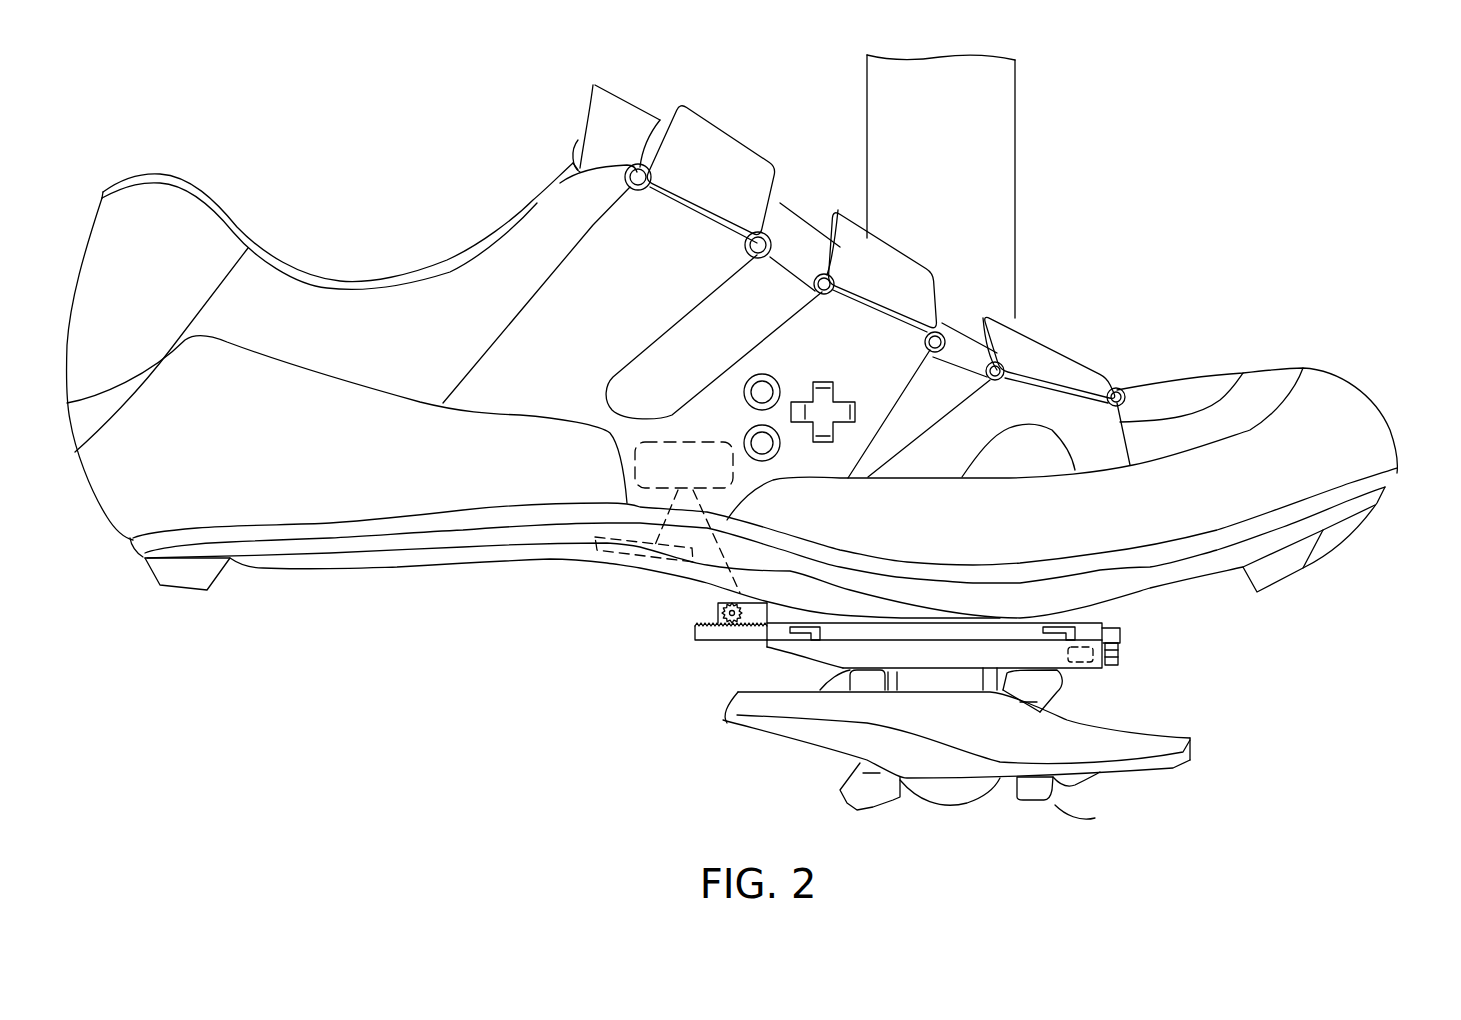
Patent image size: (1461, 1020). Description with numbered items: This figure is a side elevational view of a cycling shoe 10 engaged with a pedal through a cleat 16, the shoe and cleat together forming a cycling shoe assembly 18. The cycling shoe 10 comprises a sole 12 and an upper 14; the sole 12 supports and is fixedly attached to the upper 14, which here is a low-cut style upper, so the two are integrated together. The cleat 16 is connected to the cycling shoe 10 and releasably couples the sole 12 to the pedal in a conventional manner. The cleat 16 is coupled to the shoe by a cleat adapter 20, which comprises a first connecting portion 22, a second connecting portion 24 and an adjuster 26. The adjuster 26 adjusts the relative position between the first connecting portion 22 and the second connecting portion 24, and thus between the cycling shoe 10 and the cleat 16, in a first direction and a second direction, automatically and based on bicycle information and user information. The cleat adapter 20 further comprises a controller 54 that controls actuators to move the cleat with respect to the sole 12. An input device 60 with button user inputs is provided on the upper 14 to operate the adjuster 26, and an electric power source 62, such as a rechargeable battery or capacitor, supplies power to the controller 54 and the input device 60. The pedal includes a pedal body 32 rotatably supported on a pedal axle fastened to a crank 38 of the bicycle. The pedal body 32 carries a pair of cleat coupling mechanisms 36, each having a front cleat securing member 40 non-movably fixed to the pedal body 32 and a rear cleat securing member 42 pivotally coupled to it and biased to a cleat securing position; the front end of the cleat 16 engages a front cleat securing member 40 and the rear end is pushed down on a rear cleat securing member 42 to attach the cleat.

The cycling shoe 10 is at (1345, 352).
The sole 12 is at (1207, 585).
The upper 14 is at (1162, 376).
The cleat 16 is at (940, 692).
The cycling shoe assembly 18 is at (1345, 737).
The cleat adapter 20 is at (1147, 650).
The first connecting portion 22 is at (767, 648).
The second connecting portion 24 is at (913, 647).
The adjuster 26 is at (687, 650).
The pedal body 32 is at (767, 737).
The cleat coupling mechanism 36 is at (993, 650).
The crank 38 is at (1015, 152).
The front cleat securing member 40 is at (1060, 698).
The rear cleat securing member 42 is at (828, 677).
The controller 54 is at (630, 455).
The input device 60 is at (838, 373).
The electric power source 62 is at (612, 552).